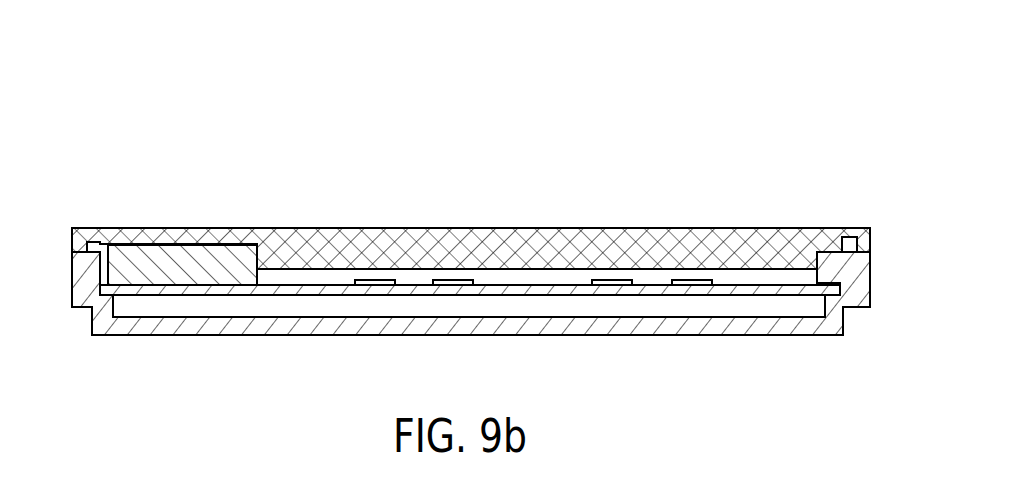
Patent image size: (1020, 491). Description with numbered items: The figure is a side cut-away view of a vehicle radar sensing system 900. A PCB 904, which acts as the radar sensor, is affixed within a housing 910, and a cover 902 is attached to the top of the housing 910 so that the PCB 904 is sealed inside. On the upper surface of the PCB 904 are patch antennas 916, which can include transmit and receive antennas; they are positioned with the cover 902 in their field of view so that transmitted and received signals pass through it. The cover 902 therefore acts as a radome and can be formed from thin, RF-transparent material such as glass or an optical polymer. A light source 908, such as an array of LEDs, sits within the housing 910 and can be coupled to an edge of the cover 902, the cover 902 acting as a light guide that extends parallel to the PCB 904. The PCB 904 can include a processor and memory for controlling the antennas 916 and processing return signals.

The sensing system 900 is at (812, 98).
The cover 902 is at (775, 228).
The PCB 904 is at (723, 288).
The light source 908 is at (150, 252).
The housing 910 is at (97, 277).
The patch antennas 916 is at (380, 282).